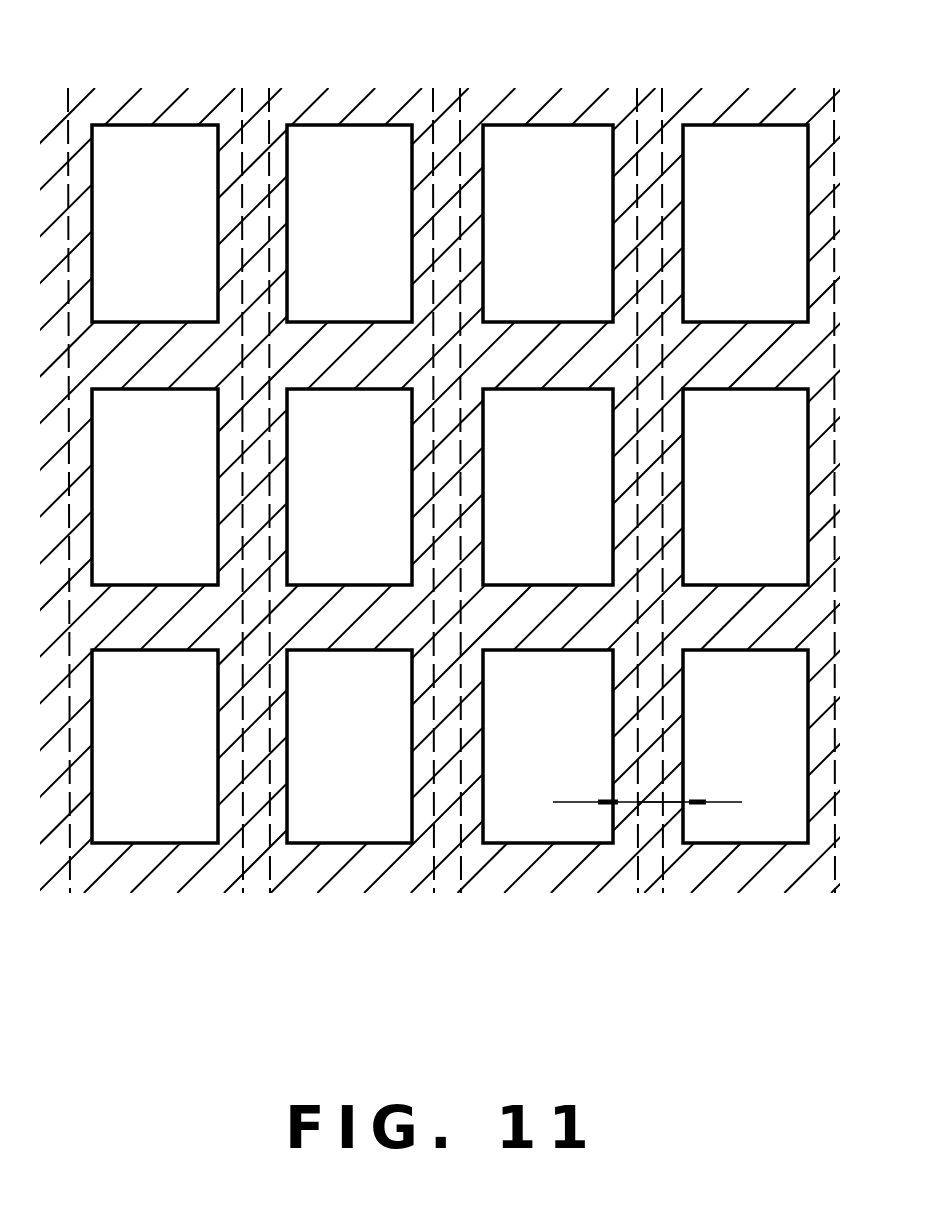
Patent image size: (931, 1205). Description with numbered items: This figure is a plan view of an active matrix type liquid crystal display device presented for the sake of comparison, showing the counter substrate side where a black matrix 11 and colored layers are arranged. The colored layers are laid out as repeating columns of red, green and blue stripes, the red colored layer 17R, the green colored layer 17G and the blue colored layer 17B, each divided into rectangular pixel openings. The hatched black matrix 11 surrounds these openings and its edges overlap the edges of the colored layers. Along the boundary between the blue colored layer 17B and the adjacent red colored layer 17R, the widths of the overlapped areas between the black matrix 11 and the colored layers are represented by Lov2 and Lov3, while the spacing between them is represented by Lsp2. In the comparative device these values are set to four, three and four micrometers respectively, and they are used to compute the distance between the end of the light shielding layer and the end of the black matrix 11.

The black matrix 11 is at (258, 903).
The colored layer (red) 17R is at (55, 75).
The colored layer (green) 17G is at (450, 75).
The colored layer (blue) 17B is at (648, 75).
The overlap width Lov2 is at (625, 805).
The spacing width Lsp2 is at (650, 805).
The overlap width Lov3 is at (674, 805).